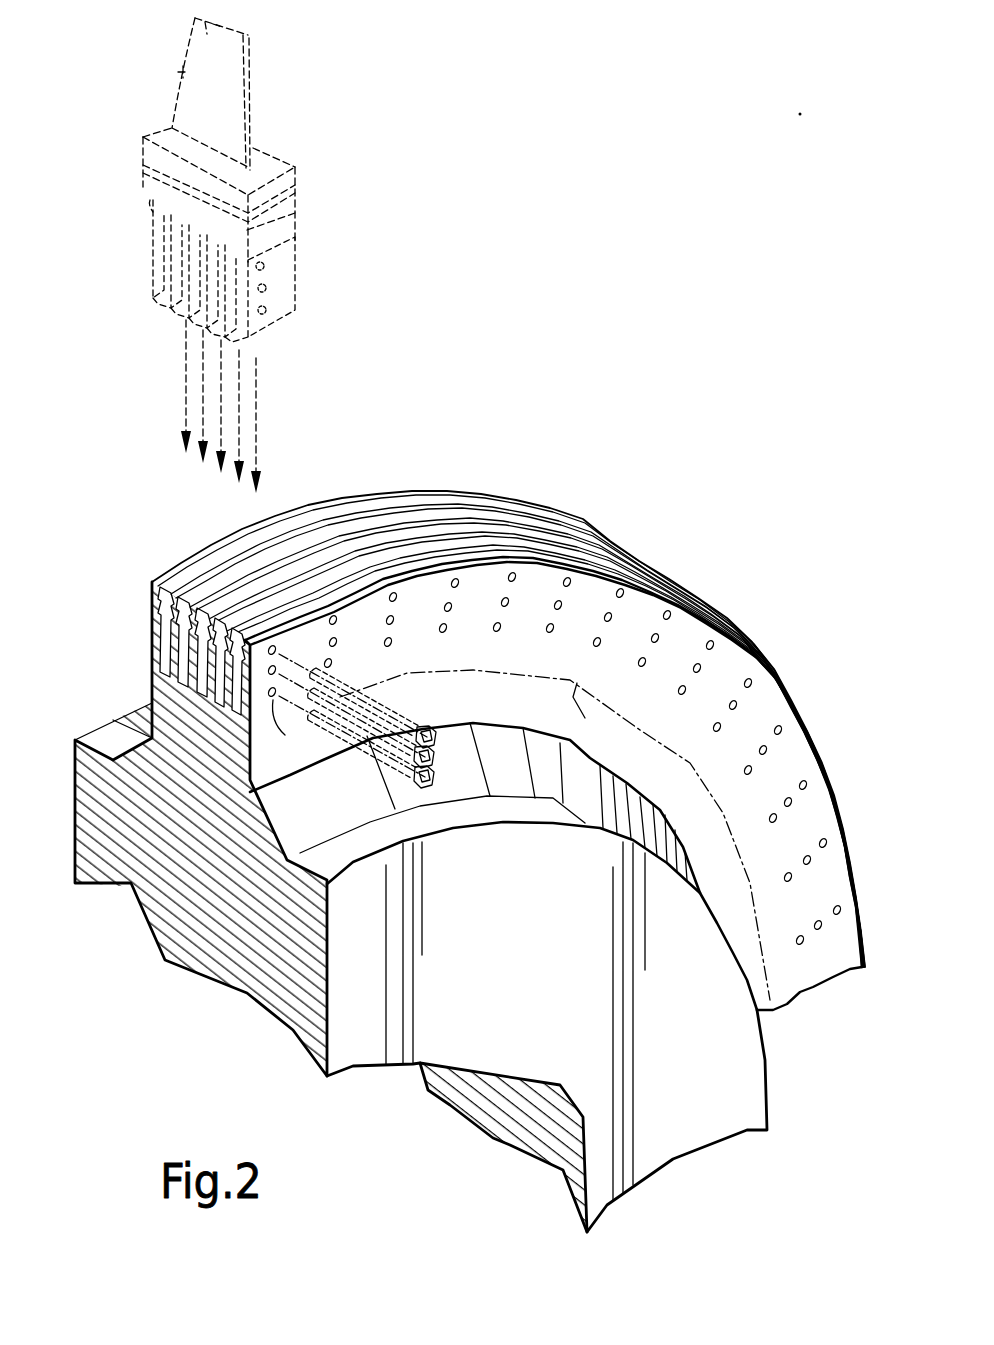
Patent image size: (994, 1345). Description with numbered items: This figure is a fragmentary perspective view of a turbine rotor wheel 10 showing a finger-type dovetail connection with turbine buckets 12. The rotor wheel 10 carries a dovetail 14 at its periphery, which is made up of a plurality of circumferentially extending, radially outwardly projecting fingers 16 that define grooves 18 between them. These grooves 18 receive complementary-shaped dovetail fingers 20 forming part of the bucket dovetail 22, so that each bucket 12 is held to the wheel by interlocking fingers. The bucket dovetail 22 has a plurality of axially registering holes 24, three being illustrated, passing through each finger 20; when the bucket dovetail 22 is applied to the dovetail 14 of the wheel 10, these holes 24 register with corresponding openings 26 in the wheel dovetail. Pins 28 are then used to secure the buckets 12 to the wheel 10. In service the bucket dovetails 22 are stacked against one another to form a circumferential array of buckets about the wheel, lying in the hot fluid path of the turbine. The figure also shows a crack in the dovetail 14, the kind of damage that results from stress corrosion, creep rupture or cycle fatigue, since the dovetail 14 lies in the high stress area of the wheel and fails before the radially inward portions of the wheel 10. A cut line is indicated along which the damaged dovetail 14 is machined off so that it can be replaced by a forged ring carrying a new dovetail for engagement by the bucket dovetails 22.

The rotor wheel 10 is at (95, 733).
The bucket 12 is at (182, 70).
The dovetail 14 is at (152, 622).
The fingers 16 is at (201, 570).
The grooves 18 is at (226, 568).
The dovetail fingers 20 is at (297, 284).
The bucket dovetail 22 is at (150, 200).
The holes 24 is at (273, 311).
The openings 26 is at (337, 645).
The pins 28 is at (330, 740).